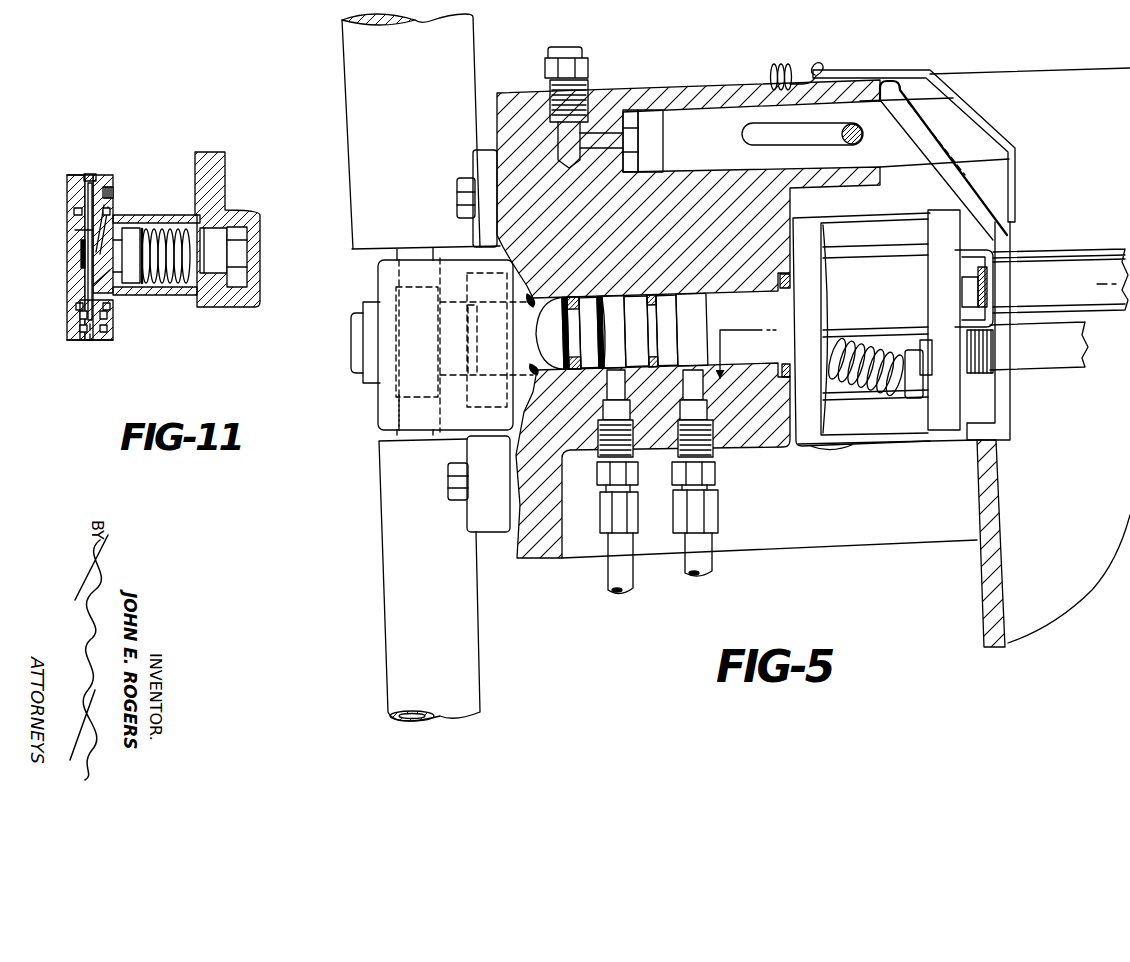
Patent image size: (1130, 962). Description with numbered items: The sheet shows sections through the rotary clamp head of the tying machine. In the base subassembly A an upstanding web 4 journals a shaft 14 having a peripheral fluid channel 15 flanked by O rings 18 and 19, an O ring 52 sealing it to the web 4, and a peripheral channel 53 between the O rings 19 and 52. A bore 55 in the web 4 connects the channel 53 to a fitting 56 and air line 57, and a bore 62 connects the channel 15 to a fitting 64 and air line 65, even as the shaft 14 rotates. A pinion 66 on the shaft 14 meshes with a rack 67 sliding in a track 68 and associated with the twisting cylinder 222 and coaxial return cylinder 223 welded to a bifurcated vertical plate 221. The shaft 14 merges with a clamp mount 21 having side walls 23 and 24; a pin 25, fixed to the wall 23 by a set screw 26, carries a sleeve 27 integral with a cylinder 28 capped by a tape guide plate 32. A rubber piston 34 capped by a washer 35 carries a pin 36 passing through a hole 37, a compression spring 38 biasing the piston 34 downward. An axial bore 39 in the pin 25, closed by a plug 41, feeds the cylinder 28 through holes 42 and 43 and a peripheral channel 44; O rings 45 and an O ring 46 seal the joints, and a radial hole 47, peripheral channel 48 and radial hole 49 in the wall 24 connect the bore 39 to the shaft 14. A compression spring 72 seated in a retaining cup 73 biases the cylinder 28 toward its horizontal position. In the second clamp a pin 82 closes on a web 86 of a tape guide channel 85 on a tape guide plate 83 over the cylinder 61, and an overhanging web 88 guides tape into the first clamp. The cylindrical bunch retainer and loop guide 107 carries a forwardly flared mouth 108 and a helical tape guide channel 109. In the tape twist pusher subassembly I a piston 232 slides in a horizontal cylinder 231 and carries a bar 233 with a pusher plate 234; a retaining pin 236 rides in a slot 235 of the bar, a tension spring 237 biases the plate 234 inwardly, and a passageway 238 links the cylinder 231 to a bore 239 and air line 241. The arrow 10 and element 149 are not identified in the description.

In FIG. 5, the intermediate upstanding web 4 is at (660, 246).
In FIG. 5, the valve assembly direction 10 is at (742, 313).
In FIG. 5, the shaft 14 is at (355, 345).
In FIG. 5, the peripheral fluid channel 15 is at (608, 297).
In FIG. 5, the O ring 18 is at (574, 297).
In FIG. 5, the O ring 19 is at (651, 297).
In FIG. 5, the clamp mount 21 is at (798, 222).
In FIG. 5, the O ring 52 is at (781, 276).
In FIG. 5, the peripheral channel 53 is at (688, 297).
In FIG. 5, the bore 55 is at (688, 386).
In FIG. 5, the fitting 56 is at (720, 478).
In FIG. 5, the air line 57 is at (702, 571).
In FIG. 5, the cylinder 61 is at (882, 307).
In FIG. 5, the bore 62 is at (608, 386).
In FIG. 5, the fitting 64 is at (603, 479).
In FIG. 5, the air line 65 is at (612, 580).
In FIG. 5, the pinion 66 is at (400, 297).
In FIG. 5, the rack 67 is at (400, 413).
In FIG. 5, the track 68 is at (386, 362).
In FIG. 5, the compression spring 72 is at (880, 347).
In FIG. 5, the retaining cup 73 is at (902, 394).
In FIG. 5, the piston rod or pin 82 is at (965, 287).
In FIG. 5, the tape guide plate 83 is at (941, 211).
In FIG. 5, the tape guide channel 85 is at (966, 256).
In FIG. 5, the web 86 is at (990, 288).
In FIG. 5, the overhanging web 88 is at (1000, 402).
In FIG. 5, the bunch retainer and loop guide 107 is at (980, 624).
In FIG. 5, the bell or mouth 108 is at (1101, 72).
In FIG. 5, the helical tape guide channel 109 is at (1123, 250).
In FIG. 5, the rod 149 is at (1066, 262).
In FIG. 5, the bifurcated vertical plate 221 is at (468, 187).
In FIG. 5, the tape clamp head twisting cylinder 222 is at (348, 74).
In FIG. 5, the untwisting or return cylinder 223 is at (383, 511).
In FIG. 5, the horizontal cylinder 231 is at (698, 110).
In FIG. 5, the piston 232 is at (648, 110).
In FIG. 5, the bar 233 is at (730, 115).
In FIG. 5, the pusher plate 234 is at (928, 72).
In FIG. 5, the slot 235 is at (752, 143).
In FIG. 5, the retaining pin 236 is at (846, 134).
In FIG. 5, the tension spring 237 is at (791, 68).
In FIG. 5, the passageway 238 is at (595, 134).
In FIG. 5, the bore 239 is at (562, 147).
In FIG. 5, the air line 241 is at (567, 50).
In FIG. 5, the frame or base subassembly A is at (697, 55).
In FIG. 5, the tape twist pusher subassembly I is at (993, 123).
In FIG. 11, the side wall 23 is at (73, 175).
In FIG. 11, the side wall 24 is at (78, 341).
In FIG. 11, the pin 25 is at (100, 175).
In FIG. 11, the set screw 26 is at (113, 191).
In FIG. 11, the sleeve 27 is at (73, 270).
In FIG. 11, the cylinder 28 is at (155, 215).
In FIG. 11, the tape guide plate 32 is at (207, 154).
In FIG. 11, the rubber piston 34 is at (132, 288).
In FIG. 11, the washer 35 is at (165, 292).
In FIG. 5, the pin or rod 36 is at (975, 341).
In FIG. 11, the pin or rod 36 is at (214, 275).
In FIG. 11, the hole 37 is at (237, 288).
In FIG. 11, the compression spring 38 is at (182, 288).
In FIG. 11, the axial bore 39 is at (93, 230).
In FIG. 11, the plug 41 is at (89, 174).
In FIG. 11, the hole 42 is at (110, 272).
In FIG. 11, the hole 43 is at (104, 245).
In FIG. 11, the peripheral channel 44 is at (80, 252).
In FIG. 11, the O rings 45 is at (73, 211).
In FIG. 11, the O ring 46 is at (85, 328).
In FIG. 11, the radial hole 47 is at (85, 316).
In FIG. 11, the peripheral channel 48 is at (118, 318).
In FIG. 11, the radial hole 49 is at (90, 342).